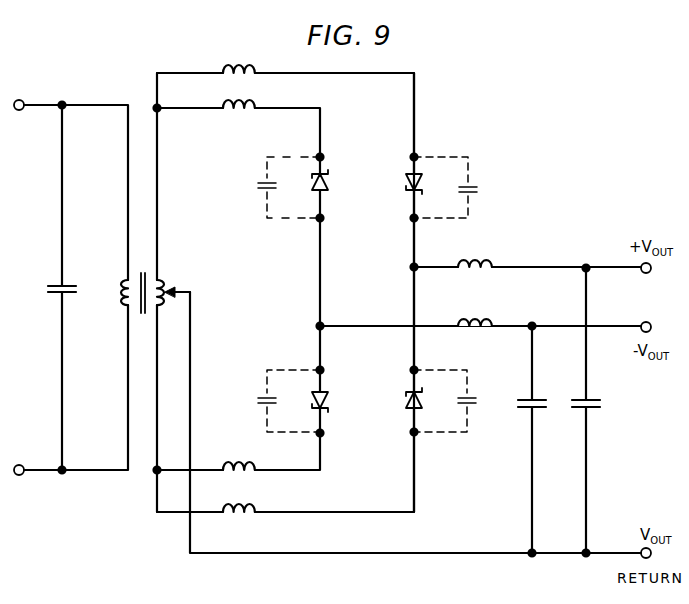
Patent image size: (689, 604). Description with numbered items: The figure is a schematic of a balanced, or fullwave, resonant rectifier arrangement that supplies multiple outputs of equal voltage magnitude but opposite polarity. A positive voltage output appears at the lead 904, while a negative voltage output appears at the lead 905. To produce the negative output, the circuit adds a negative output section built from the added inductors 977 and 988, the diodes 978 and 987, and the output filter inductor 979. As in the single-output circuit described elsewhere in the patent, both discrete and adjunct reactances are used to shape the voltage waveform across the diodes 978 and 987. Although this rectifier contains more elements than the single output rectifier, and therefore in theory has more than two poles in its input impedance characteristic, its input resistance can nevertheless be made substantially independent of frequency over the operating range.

The inductor 977 is at (248, 104).
The diode 978 is at (309, 187).
The diode 987 is at (309, 401).
The inductor 988 is at (238, 451).
The output filter inductor 979 is at (475, 312).
The lead 904 is at (630, 273).
The lead 905 is at (630, 324).